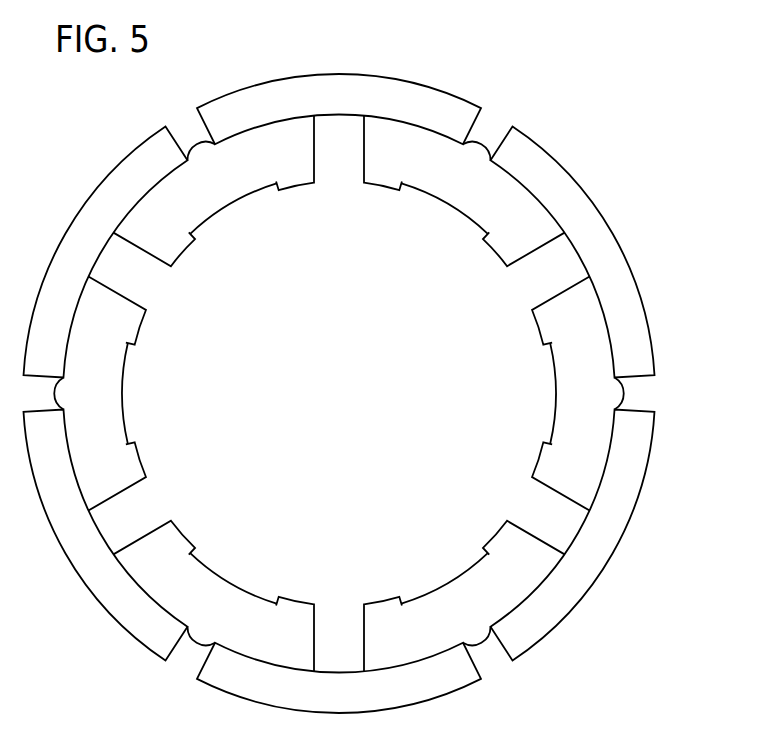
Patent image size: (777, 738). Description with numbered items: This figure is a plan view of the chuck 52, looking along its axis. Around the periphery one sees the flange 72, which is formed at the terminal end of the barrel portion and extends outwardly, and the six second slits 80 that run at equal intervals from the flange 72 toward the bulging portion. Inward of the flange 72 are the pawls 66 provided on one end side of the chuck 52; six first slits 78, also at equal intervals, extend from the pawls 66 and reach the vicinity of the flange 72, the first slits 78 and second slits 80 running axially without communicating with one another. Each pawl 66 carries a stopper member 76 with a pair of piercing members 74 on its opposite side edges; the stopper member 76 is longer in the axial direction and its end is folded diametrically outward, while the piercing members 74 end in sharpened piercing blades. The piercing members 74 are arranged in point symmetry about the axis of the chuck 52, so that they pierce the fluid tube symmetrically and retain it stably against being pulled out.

The chuck 52 is at (571, 65).
The pawls 66 is at (583, 382).
The flange 72 is at (547, 163).
The piercing members 74 is at (535, 323).
The stopper member 76 is at (445, 208).
The first slits 78 is at (537, 508).
The second slits 80 is at (643, 397).